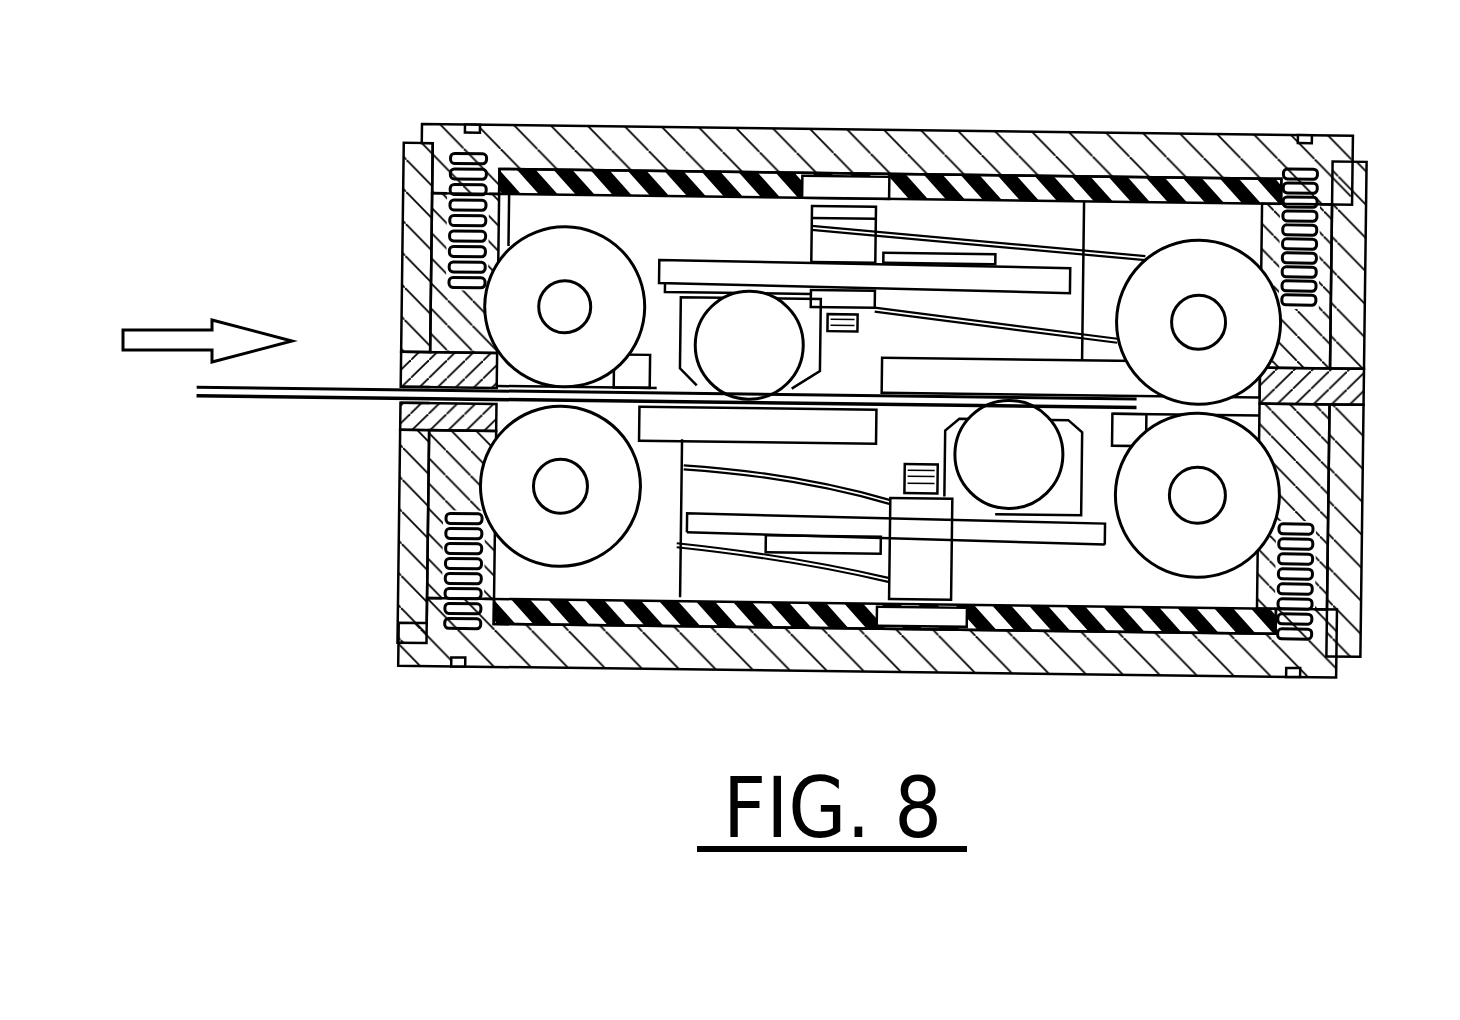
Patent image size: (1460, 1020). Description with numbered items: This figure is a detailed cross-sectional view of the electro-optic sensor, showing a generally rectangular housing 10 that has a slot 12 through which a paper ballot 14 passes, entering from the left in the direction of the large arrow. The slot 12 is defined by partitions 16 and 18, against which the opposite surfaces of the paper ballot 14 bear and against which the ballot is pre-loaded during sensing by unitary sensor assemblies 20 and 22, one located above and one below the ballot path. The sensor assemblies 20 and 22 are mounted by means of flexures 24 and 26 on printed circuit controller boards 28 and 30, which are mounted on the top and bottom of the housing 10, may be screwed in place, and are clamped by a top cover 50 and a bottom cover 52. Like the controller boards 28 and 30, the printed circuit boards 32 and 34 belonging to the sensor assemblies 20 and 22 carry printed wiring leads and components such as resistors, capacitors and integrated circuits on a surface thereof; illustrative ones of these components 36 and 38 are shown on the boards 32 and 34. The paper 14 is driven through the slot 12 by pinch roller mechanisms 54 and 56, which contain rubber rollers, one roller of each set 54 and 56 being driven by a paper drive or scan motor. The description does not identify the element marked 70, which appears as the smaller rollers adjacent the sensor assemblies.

The housing 10 is at (1370, 281).
The slot 12 is at (403, 385).
The paper ballot 14 is at (275, 402).
The partition 16 is at (827, 441).
The partition 18 is at (914, 358).
The unitary sensor assembly 20 is at (765, 240).
The unitary sensor assembly 22 is at (1032, 588).
The flexure 24 is at (1065, 238).
The flexure 26 is at (784, 560).
The printed circuit controller board 28 is at (680, 195).
The printed circuit controller board 30 is at (885, 660).
The printed circuit board 32 is at (1043, 300).
The printed circuit board 34 is at (1076, 541).
The component 36 is at (918, 262).
The component 38 is at (827, 540).
The top cover 50 is at (650, 148).
The bottom cover 52 is at (1070, 677).
The pinch roller mechanism 54 is at (582, 266).
The pinch roller mechanism 56 is at (1220, 289).
The pinch roller 70 is at (777, 359).